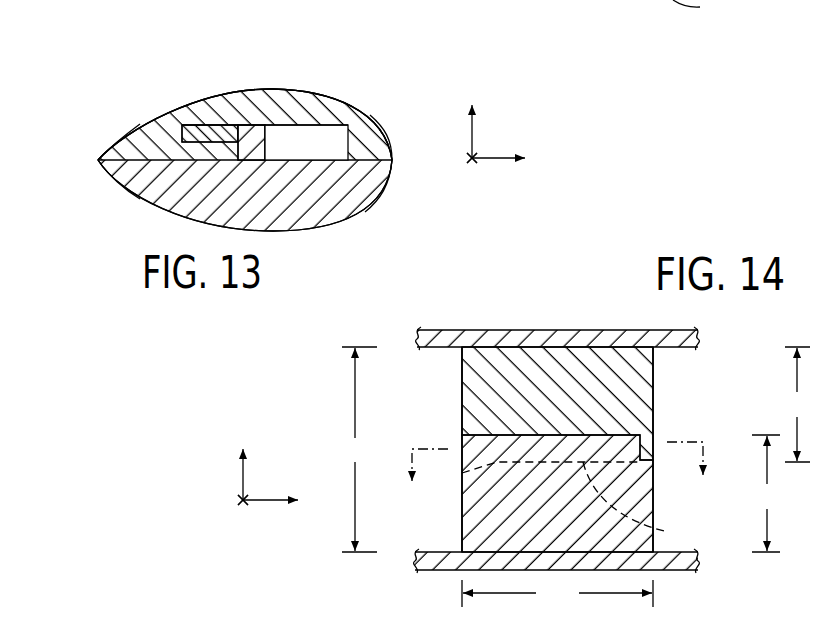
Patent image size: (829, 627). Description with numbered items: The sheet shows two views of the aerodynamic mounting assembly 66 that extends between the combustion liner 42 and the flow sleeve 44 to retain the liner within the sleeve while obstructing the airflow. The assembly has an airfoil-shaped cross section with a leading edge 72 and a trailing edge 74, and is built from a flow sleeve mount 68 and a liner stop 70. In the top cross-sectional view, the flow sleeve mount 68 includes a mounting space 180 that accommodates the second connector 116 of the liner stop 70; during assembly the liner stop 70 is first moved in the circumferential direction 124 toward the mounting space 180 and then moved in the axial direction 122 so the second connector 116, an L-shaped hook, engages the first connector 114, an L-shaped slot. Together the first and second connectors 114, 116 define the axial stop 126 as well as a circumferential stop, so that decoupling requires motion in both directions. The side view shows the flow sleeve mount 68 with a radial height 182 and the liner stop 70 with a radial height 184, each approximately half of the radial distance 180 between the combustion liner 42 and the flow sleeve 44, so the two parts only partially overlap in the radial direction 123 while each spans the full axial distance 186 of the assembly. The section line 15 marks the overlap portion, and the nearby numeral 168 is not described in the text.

In FIG. 14, the section line 15- 15 is at (559, 480).
In FIG. 14, the combustion liner 42 is at (663, 571).
In FIG. 14, the flow sleeve 44 is at (561, 330).
In FIG. 13, the aerodynamic mounting assembly 66 is at (363, 72).
In FIG. 14, the aerodynamic mounting assembly 66 is at (665, 504).
In FIG. 13, the flow sleeve mount 68 is at (218, 113).
In FIG. 14, the flow sleeve mount 68 is at (653, 385).
In FIG. 13, the liner stop 70 is at (321, 231).
In FIG. 14, the liner stop 70 is at (462, 521).
In FIG. 13, the leading edge 72 is at (399, 160).
In FIG. 14, the leading edge 72 is at (660, 414).
In FIG. 13, the trailing edge 74 is at (92, 158).
In FIG. 14, the trailing edge 74 is at (457, 414).
In FIG. 13, the first connector 114 is at (197, 125).
In FIG. 14, the first connector 114 is at (462, 473).
In FIG. 13, the second connector 116 is at (242, 132).
In FIG. 14, the second connector 116 is at (642, 507).
In FIG. 13, the axial direction 122 is at (494, 160).
In FIG. 14, the axial direction 122 is at (267, 502).
In FIG. 13, the radial direction 123 is at (469, 160).
In FIG. 14, the radial direction 123 is at (245, 477).
In FIG. 13, the circumferential direction 124 is at (477, 133).
In FIG. 14, the circumferential direction 124 is at (240, 502).
In FIG. 13, the axial stop 126 is at (306, 71).
In FIG. 14, the adjacent component 168 is at (703, 10).
In FIG. 13, the mounting space 180 is at (319, 138).
In FIG. 14, the mounting space 180 is at (357, 449).
In FIG. 14, the radial height of flow sleeve mount 182 is at (800, 404).
In FIG. 14, the radial height of liner stop 184 is at (766, 493).
In FIG. 14, the axial distance 186 is at (557, 594).